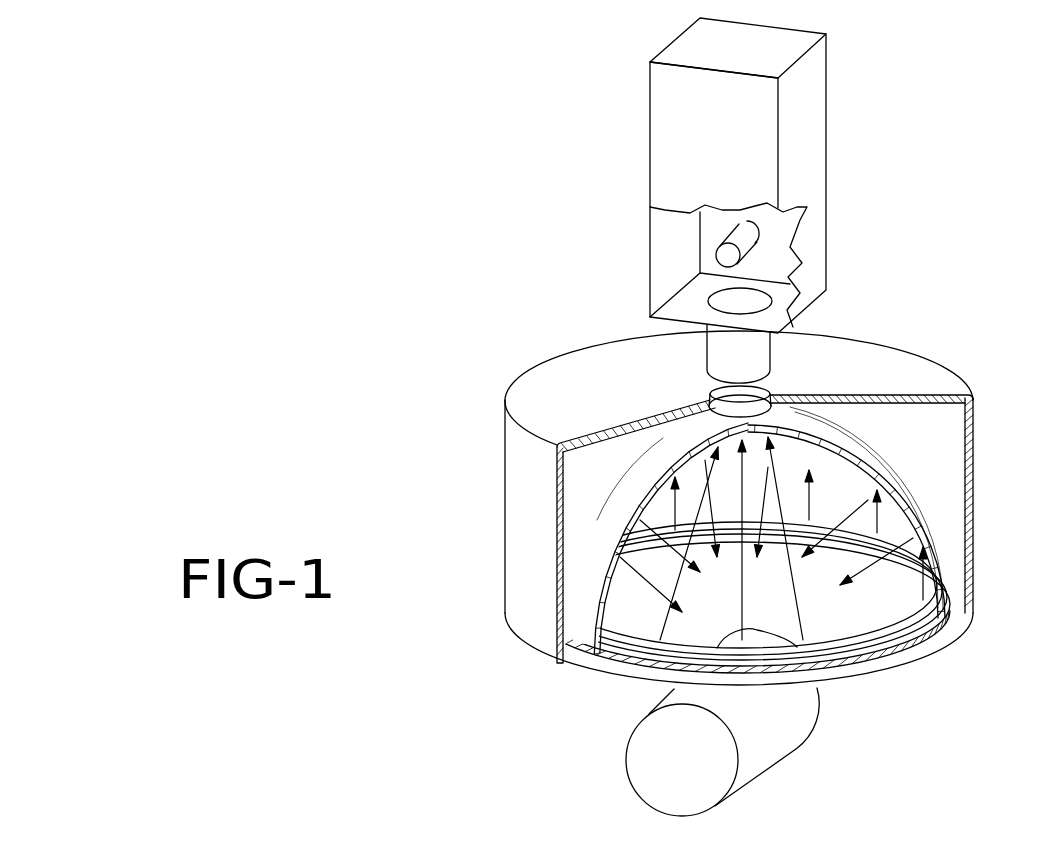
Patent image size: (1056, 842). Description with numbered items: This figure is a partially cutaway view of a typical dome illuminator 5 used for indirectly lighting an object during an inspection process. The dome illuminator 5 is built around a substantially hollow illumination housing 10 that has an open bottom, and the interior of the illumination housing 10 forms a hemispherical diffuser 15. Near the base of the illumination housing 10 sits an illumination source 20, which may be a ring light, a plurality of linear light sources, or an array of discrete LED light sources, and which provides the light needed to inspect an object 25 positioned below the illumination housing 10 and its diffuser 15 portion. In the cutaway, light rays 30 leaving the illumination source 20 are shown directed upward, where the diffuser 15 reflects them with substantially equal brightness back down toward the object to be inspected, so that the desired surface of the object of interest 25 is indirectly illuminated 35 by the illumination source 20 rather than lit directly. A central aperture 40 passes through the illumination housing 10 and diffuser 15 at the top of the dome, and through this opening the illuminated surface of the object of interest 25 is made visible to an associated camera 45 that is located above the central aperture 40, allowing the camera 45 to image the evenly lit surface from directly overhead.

The dome illuminator 5 is at (460, 228).
The illumination housing 10 is at (523, 490).
The hemispherical diffuser 15 is at (850, 437).
The illumination source 20 is at (918, 625).
The object 25 is at (760, 743).
The light rays 30 is at (850, 513).
The indirect illumination 35 is at (670, 617).
The central aperture 40 is at (708, 393).
The camera 45 is at (813, 148).